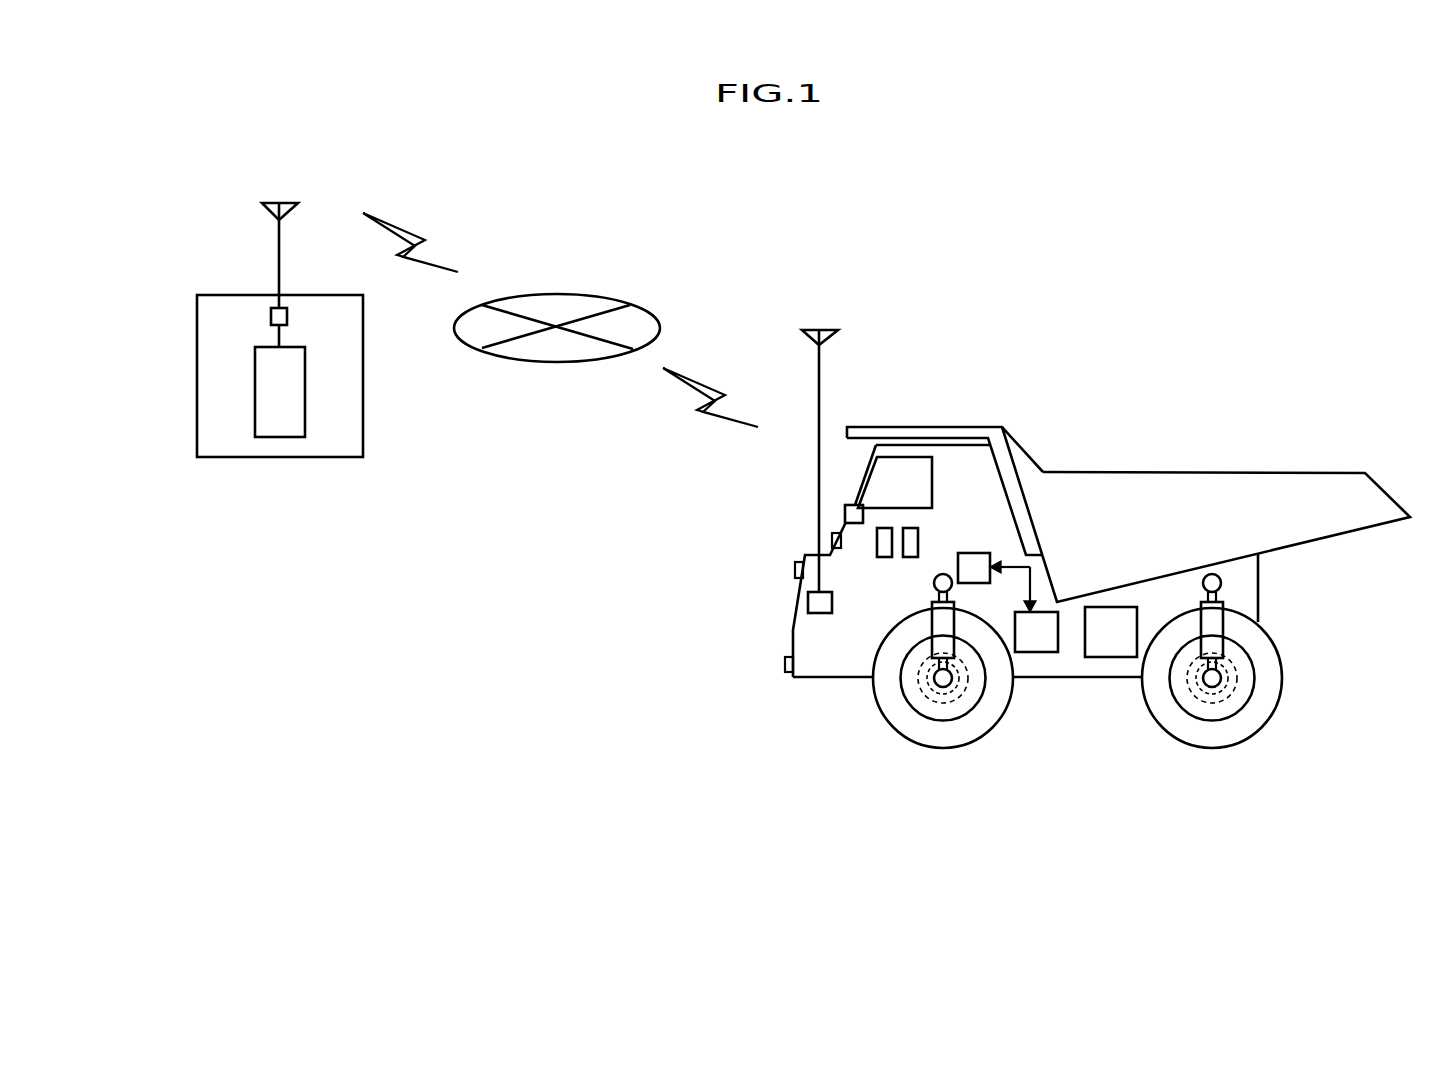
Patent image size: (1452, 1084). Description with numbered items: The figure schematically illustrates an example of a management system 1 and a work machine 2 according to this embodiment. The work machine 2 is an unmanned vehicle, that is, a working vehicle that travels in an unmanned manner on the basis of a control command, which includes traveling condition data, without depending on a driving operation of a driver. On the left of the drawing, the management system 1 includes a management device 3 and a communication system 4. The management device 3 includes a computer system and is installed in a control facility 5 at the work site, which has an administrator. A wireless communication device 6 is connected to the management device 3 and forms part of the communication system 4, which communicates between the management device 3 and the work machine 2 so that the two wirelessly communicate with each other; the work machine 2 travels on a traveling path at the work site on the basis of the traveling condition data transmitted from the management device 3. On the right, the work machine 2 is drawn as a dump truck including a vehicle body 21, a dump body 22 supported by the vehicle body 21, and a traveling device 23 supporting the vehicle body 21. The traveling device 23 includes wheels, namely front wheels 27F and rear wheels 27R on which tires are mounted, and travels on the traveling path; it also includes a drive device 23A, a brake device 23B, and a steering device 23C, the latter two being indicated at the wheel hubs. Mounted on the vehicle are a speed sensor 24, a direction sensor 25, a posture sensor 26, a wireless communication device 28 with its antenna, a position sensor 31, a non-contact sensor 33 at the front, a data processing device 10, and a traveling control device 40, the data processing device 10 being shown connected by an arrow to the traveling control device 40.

The management system 1 is at (840, 204).
The work machine 2 is at (1210, 412).
The management device 3 is at (255, 383).
The communication system 4 is at (558, 293).
The control facility 5 is at (224, 291).
The wireless communication device 6 is at (271, 315).
The data processing device 10 is at (968, 553).
The vehicle body 21 is at (1274, 600).
The dump body 22 is at (1107, 473).
The traveling device 23 is at (1294, 655).
The drive device 23A is at (1110, 657).
The brake device 23B is at (925, 710).
The steering device 23C is at (958, 687).
The speed sensor 24 is at (1237, 683).
The direction sensor 25 is at (877, 540).
The posture sensor 26 is at (908, 557).
The front wheels 27F is at (948, 720).
The rear wheels 27R is at (1212, 720).
The wireless communication device 28 is at (808, 598).
The position sensor 31 is at (845, 512).
The non-contact sensor 33 is at (785, 664).
The traveling control device 40 is at (1041, 653).